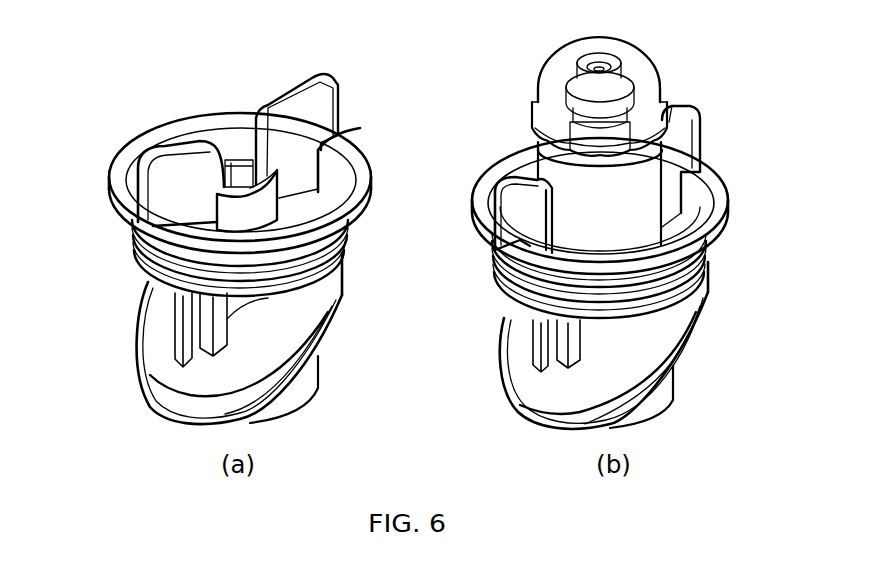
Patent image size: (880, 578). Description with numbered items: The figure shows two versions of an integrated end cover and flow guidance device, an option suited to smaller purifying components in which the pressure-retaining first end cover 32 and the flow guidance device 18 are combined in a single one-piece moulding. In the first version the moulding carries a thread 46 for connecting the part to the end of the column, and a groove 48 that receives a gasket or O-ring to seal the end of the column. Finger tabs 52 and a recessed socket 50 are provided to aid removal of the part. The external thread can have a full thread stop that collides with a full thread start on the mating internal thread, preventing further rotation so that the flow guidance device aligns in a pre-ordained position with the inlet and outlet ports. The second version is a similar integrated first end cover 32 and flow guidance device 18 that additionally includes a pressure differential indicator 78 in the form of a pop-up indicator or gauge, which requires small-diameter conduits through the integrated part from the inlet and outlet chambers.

The flow guidance device 18 is at (418, 220).
The first end cover 32 is at (148, 110).
The thread 46 is at (153, 242).
The groove 48 is at (149, 275).
The recessed socket 50 is at (238, 172).
The finger tabs 52 is at (327, 113).
The pressure differential indicator 78 is at (647, 67).